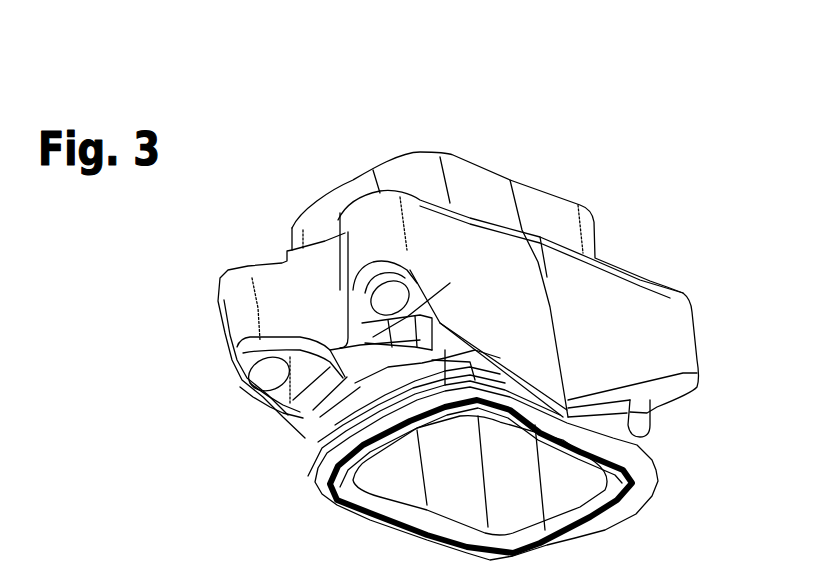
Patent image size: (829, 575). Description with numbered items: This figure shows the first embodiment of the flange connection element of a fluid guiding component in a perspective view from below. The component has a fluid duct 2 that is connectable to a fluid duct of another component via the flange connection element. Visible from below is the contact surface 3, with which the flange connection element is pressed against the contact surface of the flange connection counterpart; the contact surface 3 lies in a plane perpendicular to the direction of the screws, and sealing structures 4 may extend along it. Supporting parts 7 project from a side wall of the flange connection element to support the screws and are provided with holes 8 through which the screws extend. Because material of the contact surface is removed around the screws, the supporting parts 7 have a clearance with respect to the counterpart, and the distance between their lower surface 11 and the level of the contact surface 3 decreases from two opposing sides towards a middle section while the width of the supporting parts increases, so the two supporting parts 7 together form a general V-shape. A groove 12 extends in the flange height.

The fluid duct 2 is at (448, 478).
The contact surface 3 is at (327, 483).
The sealing structures 4 is at (577, 526).
The supporting parts 7 is at (495, 294).
The holes 8 is at (390, 300).
The lower surface 11 is at (440, 325).
The groove 12 is at (328, 287).